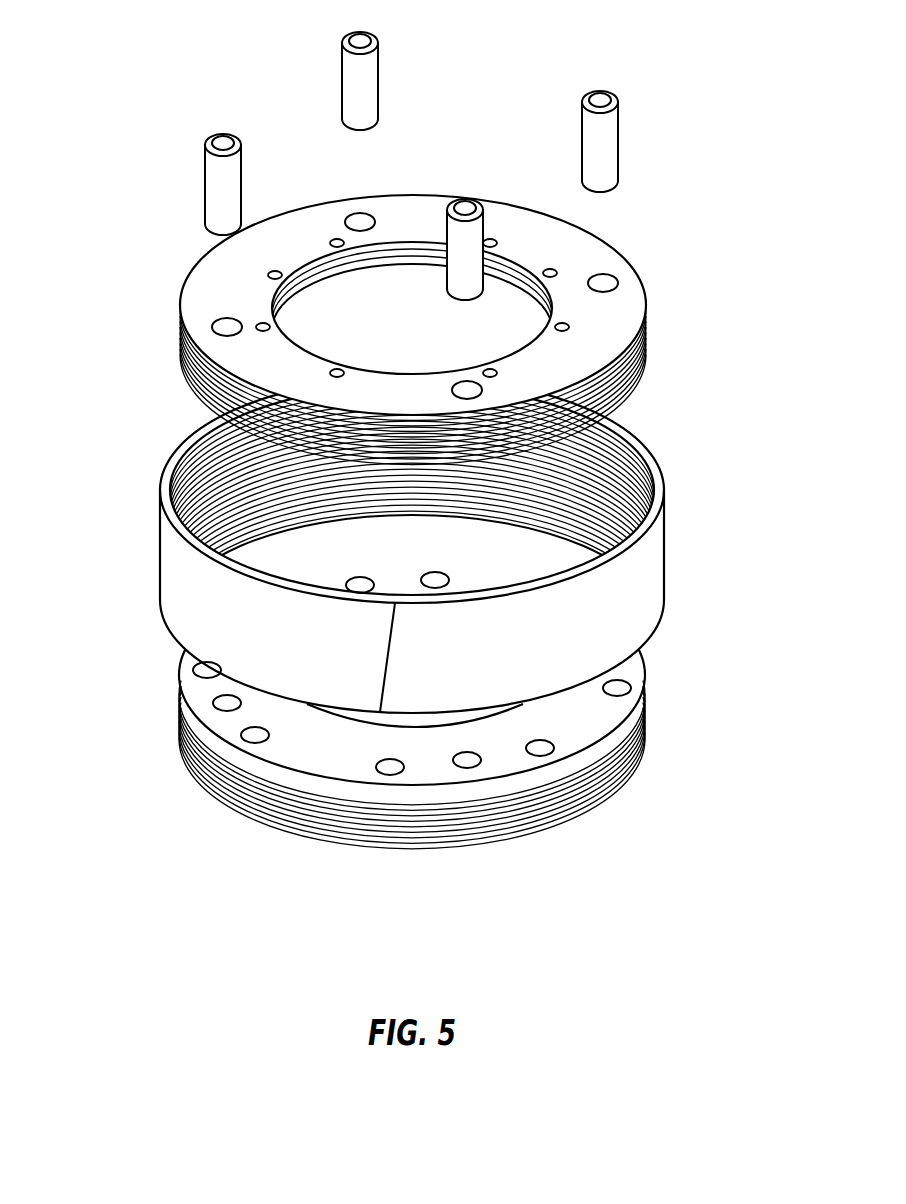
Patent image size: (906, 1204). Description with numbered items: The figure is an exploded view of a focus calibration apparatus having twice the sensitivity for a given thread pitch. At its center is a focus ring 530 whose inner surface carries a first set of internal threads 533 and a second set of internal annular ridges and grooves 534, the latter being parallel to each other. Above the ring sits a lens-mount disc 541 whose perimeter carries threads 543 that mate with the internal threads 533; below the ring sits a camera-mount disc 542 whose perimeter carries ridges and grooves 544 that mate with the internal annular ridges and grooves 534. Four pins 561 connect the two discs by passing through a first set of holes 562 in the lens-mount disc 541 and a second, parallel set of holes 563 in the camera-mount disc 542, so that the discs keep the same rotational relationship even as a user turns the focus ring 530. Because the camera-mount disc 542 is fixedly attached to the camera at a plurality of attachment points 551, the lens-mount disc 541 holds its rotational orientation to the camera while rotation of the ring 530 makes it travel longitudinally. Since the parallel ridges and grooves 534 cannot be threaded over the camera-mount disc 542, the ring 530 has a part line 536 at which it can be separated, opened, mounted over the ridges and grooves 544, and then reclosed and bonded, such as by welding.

The focus ring 530 is at (667, 537).
The first set of internal threads 533 is at (220, 523).
The second set of internal annular ridges and grooves 534 is at (190, 453).
The part line 536 is at (377, 668).
The lens-mount disc 541 is at (597, 343).
The camera-mount disc 542 is at (587, 720).
The threads 543 is at (633, 373).
The ridges and grooves 544 is at (585, 778).
The attachment points 551 is at (208, 668).
The pins 561 is at (203, 183).
The first set of holes 562 is at (227, 327).
The second, parallel set of holes 563 is at (228, 705).